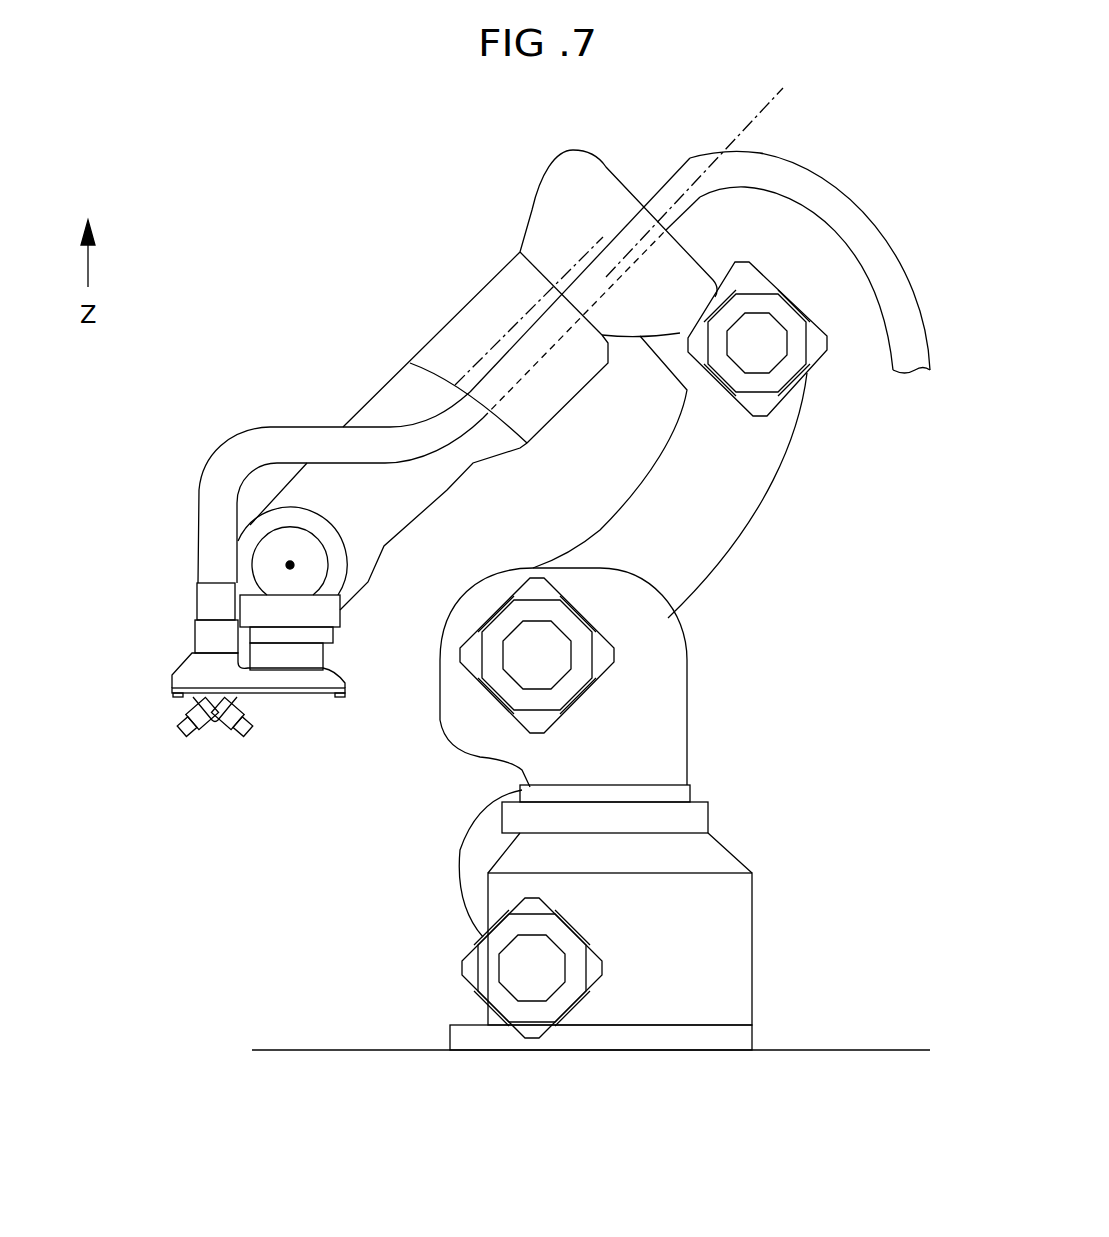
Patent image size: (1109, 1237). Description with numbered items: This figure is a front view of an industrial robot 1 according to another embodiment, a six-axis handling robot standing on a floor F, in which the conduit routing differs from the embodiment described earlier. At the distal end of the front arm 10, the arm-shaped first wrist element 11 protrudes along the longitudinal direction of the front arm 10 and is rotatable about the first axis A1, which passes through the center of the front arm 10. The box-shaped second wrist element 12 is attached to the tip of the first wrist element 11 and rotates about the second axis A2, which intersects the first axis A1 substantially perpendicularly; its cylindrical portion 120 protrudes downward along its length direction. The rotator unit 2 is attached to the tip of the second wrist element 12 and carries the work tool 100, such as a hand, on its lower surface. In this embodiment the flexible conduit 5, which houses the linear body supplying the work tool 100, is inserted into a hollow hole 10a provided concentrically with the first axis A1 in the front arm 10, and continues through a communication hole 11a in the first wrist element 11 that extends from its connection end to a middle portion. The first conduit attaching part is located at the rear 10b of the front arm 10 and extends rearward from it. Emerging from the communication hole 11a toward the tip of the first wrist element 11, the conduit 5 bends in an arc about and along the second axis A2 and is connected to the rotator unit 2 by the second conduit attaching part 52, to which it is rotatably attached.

The robot 1 is at (302, 252).
The rotator unit 2 is at (148, 680).
The conduit 5 is at (222, 443).
The front arm 10 is at (553, 190).
The hollow hole 10a is at (600, 223).
The rear 10b is at (630, 210).
The first wrist element 11 is at (455, 318).
The communication hole 11a is at (457, 363).
The second wrist element 12 is at (340, 603).
The second conduit attaching part 52 is at (195, 637).
The work tool 100 is at (175, 722).
The cylindrical portion 120 is at (320, 655).
The first axis A1 is at (747, 123).
The second axis A2 is at (290, 565).
The floor F is at (302, 1048).